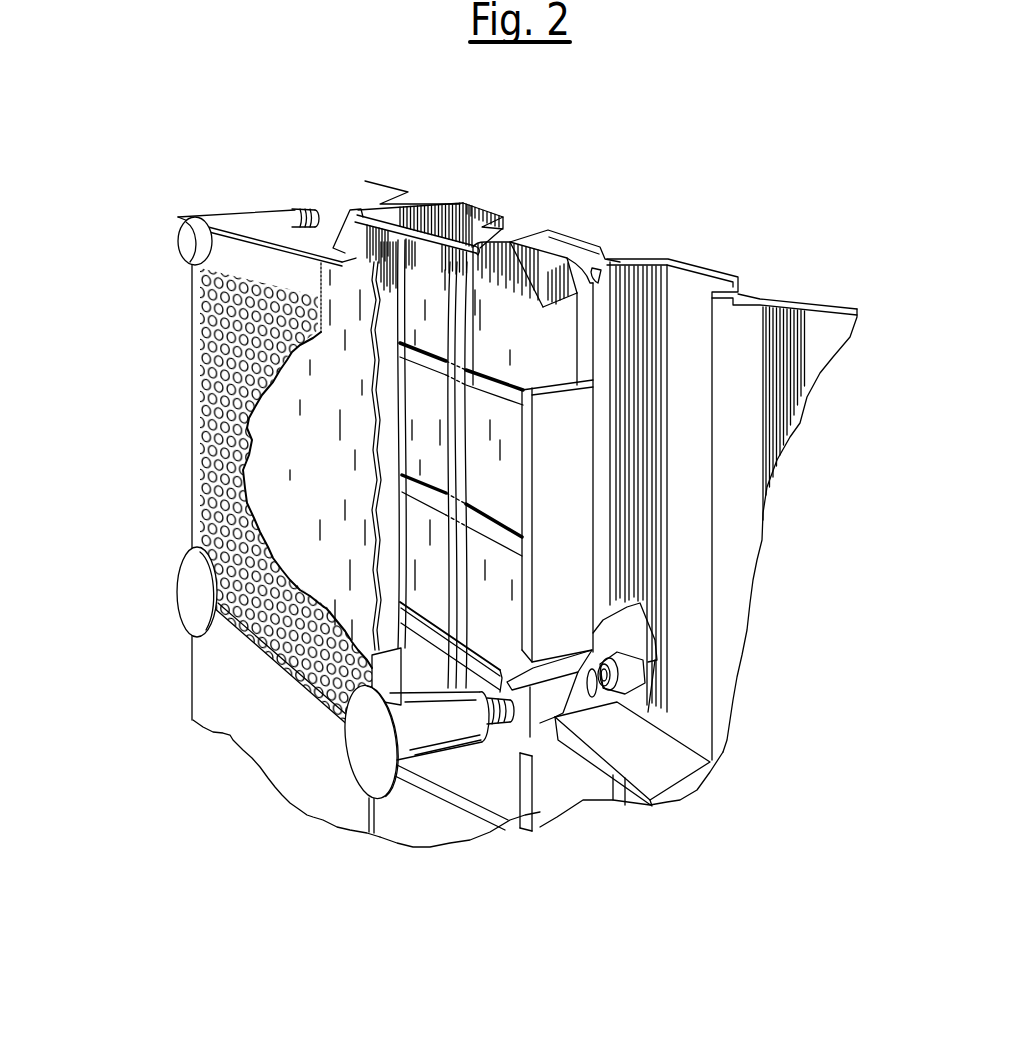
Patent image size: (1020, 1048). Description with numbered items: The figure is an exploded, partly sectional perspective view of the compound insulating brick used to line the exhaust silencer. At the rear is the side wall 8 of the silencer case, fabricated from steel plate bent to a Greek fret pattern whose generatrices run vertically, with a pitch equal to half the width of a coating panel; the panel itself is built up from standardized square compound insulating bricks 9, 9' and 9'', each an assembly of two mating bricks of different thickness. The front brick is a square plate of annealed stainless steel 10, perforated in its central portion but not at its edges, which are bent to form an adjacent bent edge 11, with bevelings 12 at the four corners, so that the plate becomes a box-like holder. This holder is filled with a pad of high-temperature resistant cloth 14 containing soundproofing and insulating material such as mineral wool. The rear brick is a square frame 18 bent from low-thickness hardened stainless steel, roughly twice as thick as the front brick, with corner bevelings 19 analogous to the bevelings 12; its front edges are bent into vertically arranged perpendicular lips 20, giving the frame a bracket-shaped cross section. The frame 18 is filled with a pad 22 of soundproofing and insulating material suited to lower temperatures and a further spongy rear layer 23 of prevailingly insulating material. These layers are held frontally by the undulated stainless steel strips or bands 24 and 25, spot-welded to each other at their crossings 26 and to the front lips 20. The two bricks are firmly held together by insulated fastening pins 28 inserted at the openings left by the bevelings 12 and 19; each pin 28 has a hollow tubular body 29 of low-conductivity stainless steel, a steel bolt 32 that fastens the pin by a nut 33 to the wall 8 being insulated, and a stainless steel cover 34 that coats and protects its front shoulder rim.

The side wall 8 is at (564, 243).
The compound insulating brick 9 is at (246, 471).
The compound insulating brick 9' is at (268, 720).
The compound insulating brick 9'' is at (528, 830).
The plate of annealed stainless steel 10 is at (232, 372).
The bent edge 11 is at (281, 243).
The beveling 12 is at (381, 294).
The pad of high-temperature resistant cloth 14 is at (326, 493).
The frame 18 is at (440, 227).
The beveling 19 is at (340, 232).
The front lip 20 is at (377, 222).
The pad 22 is at (515, 260).
The rear layer 23 is at (587, 320).
The undulated strip 24 is at (399, 298).
The undulated strip 25 is at (460, 378).
The crossing 26 is at (462, 372).
The insulated fastening pin 28 is at (198, 242).
The hollow tubular body 29 is at (420, 743).
The steel bolt 32 is at (308, 208).
The nut 33 is at (640, 672).
The cover of stainless steel 34 is at (190, 248).